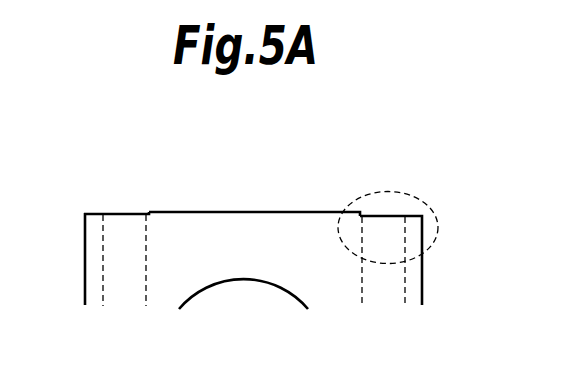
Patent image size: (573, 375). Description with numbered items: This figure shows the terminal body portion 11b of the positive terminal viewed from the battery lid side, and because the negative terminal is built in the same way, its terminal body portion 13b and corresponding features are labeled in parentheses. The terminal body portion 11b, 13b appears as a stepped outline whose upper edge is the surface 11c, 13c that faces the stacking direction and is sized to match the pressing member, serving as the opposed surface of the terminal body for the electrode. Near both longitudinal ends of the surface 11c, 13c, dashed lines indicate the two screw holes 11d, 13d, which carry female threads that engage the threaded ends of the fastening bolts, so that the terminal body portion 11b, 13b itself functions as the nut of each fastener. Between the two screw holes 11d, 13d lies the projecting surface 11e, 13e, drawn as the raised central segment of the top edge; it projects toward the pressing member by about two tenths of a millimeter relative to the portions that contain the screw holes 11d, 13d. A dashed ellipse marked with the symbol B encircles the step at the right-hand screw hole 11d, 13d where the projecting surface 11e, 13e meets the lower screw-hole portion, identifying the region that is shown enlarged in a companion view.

The terminal body portion 11b is at (96, 278).
The terminal body portion 13b is at (85, 282).
The surface 11c is at (133, 160).
The surface 13c is at (100, 213).
The screw holes 11d is at (286, 222).
The screw holes 13d is at (123, 223).
The projecting surface 11e is at (254, 184).
The projecting surface 13e is at (257, 212).
The encircled region B is at (343, 240).